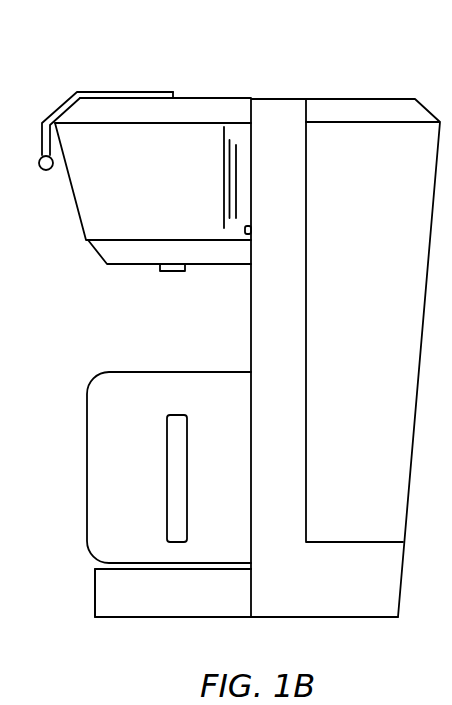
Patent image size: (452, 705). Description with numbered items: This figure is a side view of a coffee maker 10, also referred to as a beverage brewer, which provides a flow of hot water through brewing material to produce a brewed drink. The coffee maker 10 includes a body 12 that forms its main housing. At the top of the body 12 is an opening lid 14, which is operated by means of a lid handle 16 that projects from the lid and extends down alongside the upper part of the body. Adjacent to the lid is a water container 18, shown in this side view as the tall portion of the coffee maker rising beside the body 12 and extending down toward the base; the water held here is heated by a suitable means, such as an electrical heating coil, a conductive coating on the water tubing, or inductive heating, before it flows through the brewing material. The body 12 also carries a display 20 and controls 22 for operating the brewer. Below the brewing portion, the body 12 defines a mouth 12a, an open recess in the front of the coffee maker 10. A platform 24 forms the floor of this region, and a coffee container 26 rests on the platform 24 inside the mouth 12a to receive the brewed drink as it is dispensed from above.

The coffee maker 10 is at (47, 63).
The body 12 is at (283, 123).
The mouth 12a is at (97, 288).
The opening lid 14 is at (178, 112).
The lid handle 16 is at (143, 95).
The water container 18 is at (365, 274).
The display 20 is at (128, 181).
The controls 22 is at (125, 255).
The platform 24 is at (125, 593).
The coffee container 26 is at (143, 441).